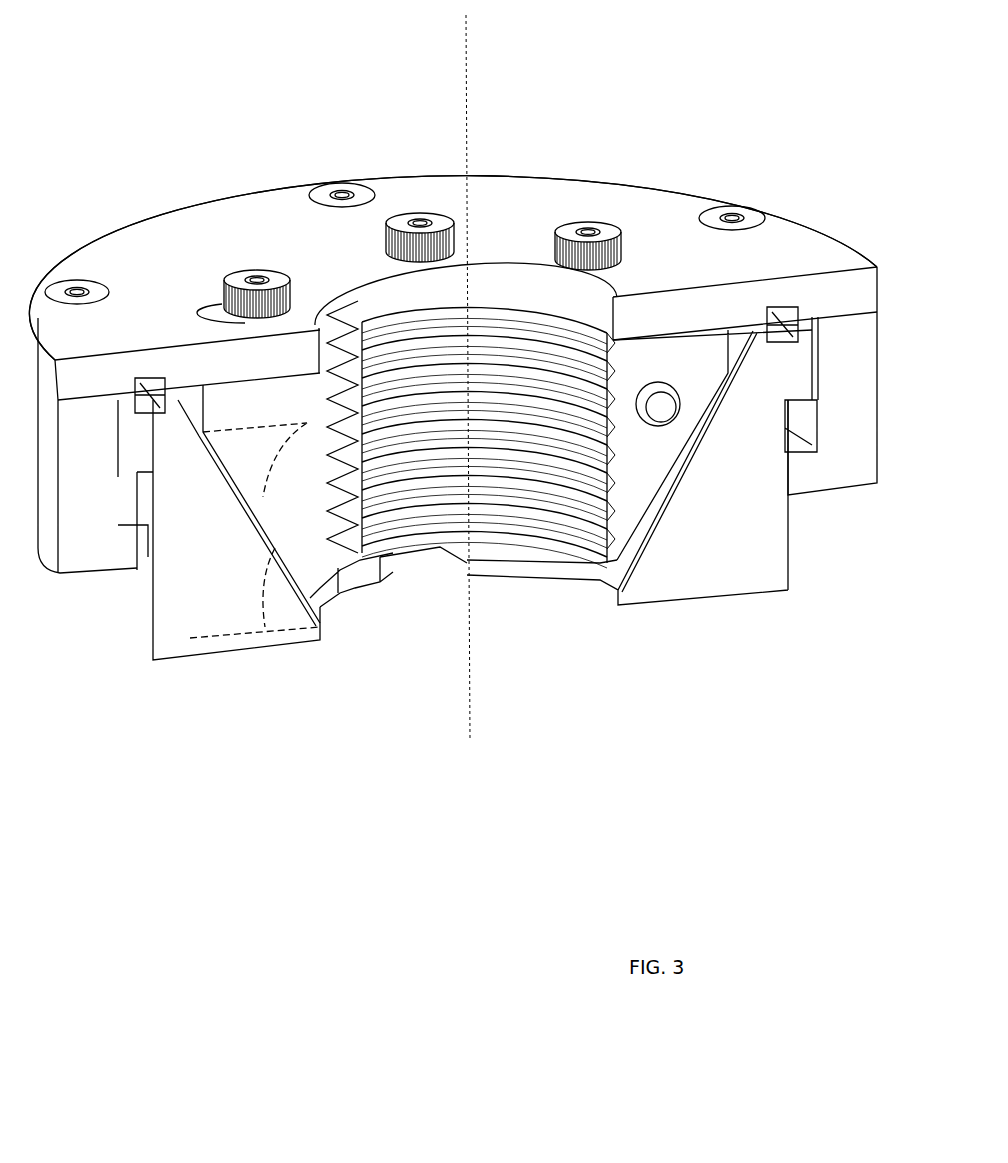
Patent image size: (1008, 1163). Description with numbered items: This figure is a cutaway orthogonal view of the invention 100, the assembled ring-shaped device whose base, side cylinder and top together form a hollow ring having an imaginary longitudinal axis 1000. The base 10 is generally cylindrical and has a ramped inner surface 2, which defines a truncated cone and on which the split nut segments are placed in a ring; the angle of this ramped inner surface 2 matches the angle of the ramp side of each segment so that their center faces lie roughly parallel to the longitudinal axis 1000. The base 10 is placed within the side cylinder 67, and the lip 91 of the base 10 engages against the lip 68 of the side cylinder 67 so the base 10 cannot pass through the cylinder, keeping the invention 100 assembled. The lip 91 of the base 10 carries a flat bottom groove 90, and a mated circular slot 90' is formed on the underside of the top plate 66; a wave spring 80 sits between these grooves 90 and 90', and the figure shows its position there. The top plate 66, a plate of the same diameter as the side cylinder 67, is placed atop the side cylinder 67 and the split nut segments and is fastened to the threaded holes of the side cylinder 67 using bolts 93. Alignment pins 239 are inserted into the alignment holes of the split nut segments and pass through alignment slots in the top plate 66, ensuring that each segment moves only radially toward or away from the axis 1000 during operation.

The invention 100 is at (203, 170).
The top plate 66 is at (648, 210).
The bolts 93 is at (333, 180).
The alignment pins 239 is at (383, 230).
The flat bottom groove 90 is at (106, 584).
The circular slot 90' is at (802, 226).
The side cylinder 67 is at (51, 578).
The lip 91 is at (140, 480).
The base 10 is at (725, 603).
The lip 68 is at (821, 497).
The wave spring 80 is at (798, 333).
The ramped inner surface 2 is at (546, 556).
The longitudinal axis 1000 is at (476, 714).